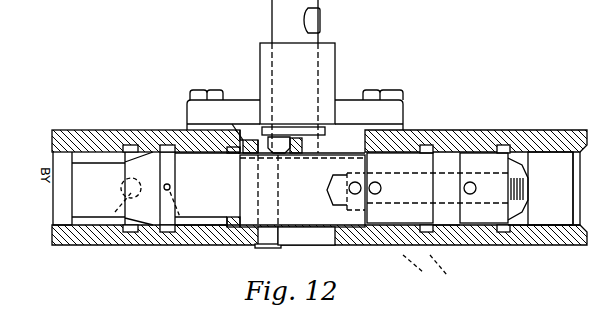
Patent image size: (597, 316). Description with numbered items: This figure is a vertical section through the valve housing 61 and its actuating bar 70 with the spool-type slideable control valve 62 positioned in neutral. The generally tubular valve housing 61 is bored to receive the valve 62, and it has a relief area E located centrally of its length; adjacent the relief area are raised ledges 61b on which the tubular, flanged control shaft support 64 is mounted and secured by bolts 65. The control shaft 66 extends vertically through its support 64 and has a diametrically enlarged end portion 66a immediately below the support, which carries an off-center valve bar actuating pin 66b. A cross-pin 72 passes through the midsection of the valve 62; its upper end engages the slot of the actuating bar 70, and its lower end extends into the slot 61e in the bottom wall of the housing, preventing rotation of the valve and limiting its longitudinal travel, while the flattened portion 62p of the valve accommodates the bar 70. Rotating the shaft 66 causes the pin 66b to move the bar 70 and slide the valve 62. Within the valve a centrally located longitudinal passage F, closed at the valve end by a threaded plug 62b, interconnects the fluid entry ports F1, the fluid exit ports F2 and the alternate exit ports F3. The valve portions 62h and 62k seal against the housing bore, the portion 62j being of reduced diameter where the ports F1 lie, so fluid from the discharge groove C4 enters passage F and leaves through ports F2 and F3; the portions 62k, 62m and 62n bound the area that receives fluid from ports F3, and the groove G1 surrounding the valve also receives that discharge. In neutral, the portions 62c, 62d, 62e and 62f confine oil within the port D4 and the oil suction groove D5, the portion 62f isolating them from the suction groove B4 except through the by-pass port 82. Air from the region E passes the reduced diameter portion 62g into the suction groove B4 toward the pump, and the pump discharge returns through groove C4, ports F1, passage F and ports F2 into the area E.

The spool-type slideable control valve 62 is at (47, 155).
The valve housing 61 is at (417, 129).
The threaded plug 62b is at (528, 185).
The valve portion 62c is at (63, 157).
The valve portion 62d is at (85, 168).
The valve portion 62e is at (143, 160).
The valve portion 62f is at (165, 167).
The reduced diameter portion 62g is at (222, 221).
The valve portion 62h is at (327, 163).
The reduced diameter valve portion 62j is at (392, 160).
The valve portion 62k is at (447, 157).
The valve portion 62m is at (487, 158).
The valve portion 62n is at (518, 153).
The flattened portion 62p is at (303, 157).
The raised ledges 61b is at (376, 127).
The slot 61e is at (333, 247).
The control shaft support 64 is at (265, 72).
The bolts 65 is at (212, 97).
The control shaft 66 is at (287, 30).
The diametrically enlarged end portion 66a is at (340, 154).
The valve bar actuating pin 66b is at (280, 145).
The actuating bar 70 is at (197, 96).
The cross-pin 72 is at (293, 247).
The port 82 is at (197, 203).
The relief area E is at (245, 128).
The longitudinally extending passage F is at (524, 198).
The fluid entry ports F1 is at (447, 247).
The fluid exit ports F2 is at (412, 247).
The alternate fluid exit ports F3 is at (475, 193).
The valve encircling discharge groove C4 is at (447, 238).
The suction groove B4 is at (167, 233).
The port D4 is at (90, 246).
The oil suction groove D5 is at (127, 235).
The groove G1 is at (517, 238).